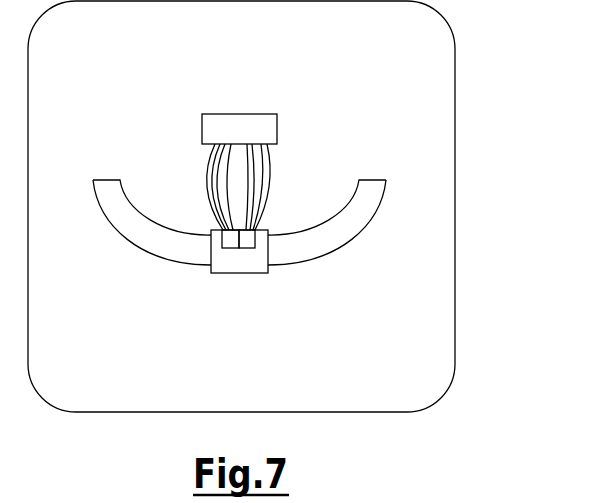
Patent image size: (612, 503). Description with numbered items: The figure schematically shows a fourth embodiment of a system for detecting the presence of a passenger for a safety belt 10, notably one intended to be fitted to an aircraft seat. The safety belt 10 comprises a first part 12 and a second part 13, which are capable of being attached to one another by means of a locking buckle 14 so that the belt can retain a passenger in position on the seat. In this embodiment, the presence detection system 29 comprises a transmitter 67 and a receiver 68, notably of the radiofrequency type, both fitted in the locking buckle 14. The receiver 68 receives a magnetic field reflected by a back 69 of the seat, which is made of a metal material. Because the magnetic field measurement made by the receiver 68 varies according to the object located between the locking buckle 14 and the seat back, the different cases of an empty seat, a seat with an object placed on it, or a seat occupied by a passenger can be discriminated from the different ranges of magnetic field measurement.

The safety belt 10 is at (124, 116).
The first part 12 is at (133, 222).
The second part 13 is at (353, 223).
The locking buckle 14 is at (230, 276).
The presence detection system 29 is at (280, 206).
The transmitter 67 is at (230, 238).
The receiver 68 is at (252, 238).
The back 69 is at (223, 127).